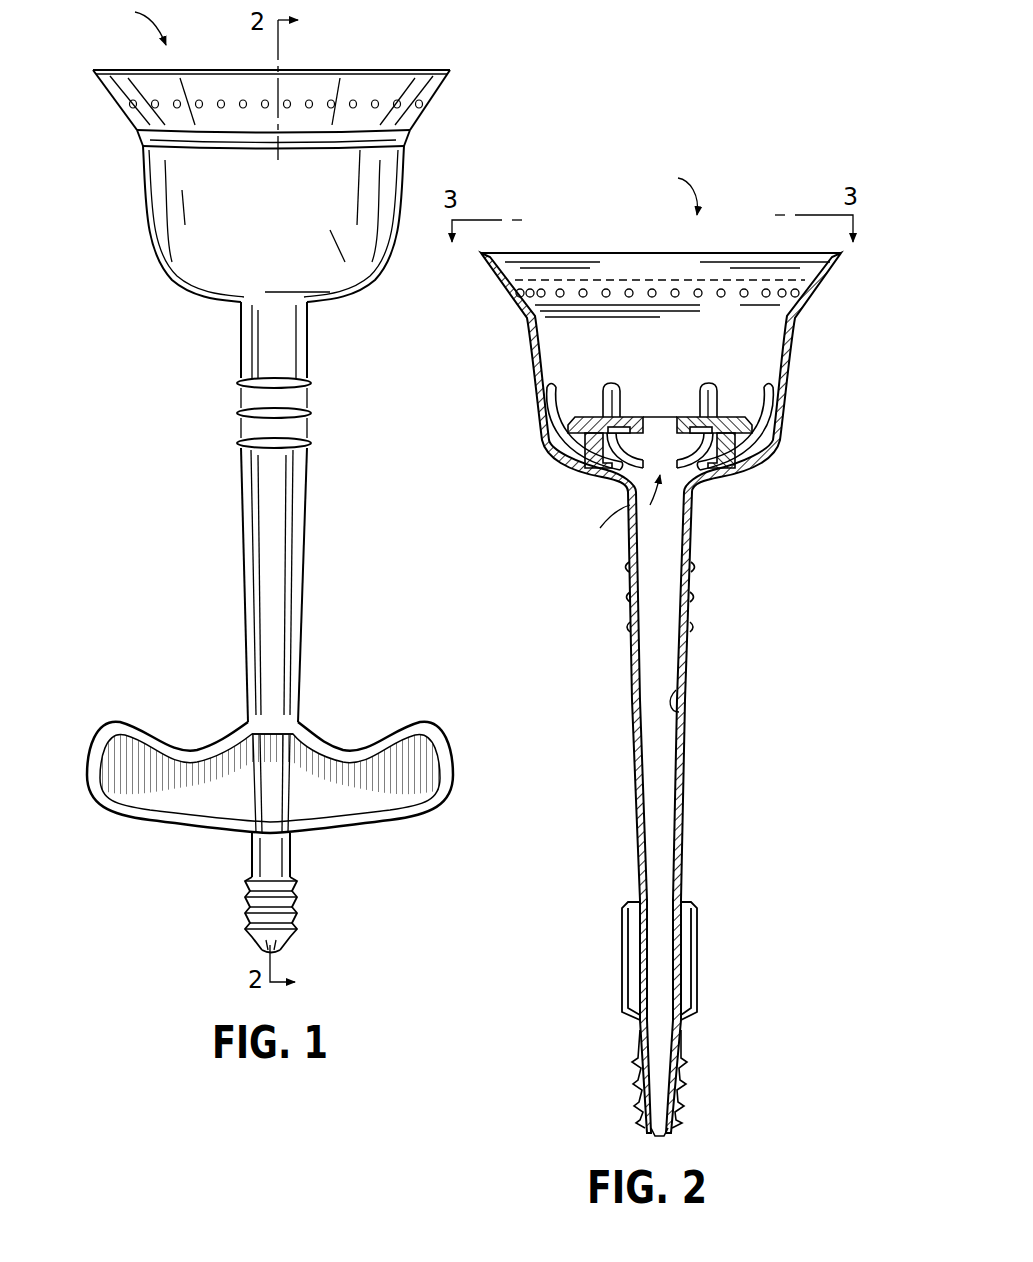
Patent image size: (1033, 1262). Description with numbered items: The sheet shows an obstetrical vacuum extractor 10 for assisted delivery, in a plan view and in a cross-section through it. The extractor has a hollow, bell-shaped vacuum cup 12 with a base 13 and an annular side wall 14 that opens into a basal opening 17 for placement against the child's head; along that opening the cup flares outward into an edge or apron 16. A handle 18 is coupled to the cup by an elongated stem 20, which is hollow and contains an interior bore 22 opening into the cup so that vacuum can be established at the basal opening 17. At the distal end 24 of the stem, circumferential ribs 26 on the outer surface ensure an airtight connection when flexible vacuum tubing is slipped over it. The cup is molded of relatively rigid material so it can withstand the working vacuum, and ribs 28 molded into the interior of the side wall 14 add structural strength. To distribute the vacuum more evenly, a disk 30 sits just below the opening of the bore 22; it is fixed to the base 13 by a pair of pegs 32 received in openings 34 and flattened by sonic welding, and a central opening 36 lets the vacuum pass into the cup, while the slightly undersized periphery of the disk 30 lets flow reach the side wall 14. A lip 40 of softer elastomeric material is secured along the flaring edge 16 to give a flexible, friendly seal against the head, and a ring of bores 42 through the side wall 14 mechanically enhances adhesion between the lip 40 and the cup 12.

In FIG. 1, the obstetrical vacuum extractor 10 is at (140, 452).
In FIG. 2, the obstetrical vacuum extractor 10 is at (760, 578).
In FIG. 1, the vacuum cup 12 is at (274, 176).
In FIG. 2, the vacuum cup 12 is at (669, 658).
In FIG. 1, the base 13 is at (215, 290).
In FIG. 2, the base 13 is at (588, 462).
In FIG. 1, the annular side wall 14 is at (148, 195).
In FIG. 2, the annular side wall 14 is at (538, 372).
In FIG. 2, the outwardly flaring edge 16 is at (508, 278).
In FIG. 1, the basal opening 17 is at (438, 72).
In FIG. 2, the basal opening 17 is at (510, 270).
In FIG. 1, the handle 18 is at (450, 760).
In FIG. 2, the handle 18 is at (620, 952).
In FIG. 1, the elongated stem 20 is at (303, 528).
In FIG. 2, the elongated stem 20 is at (715, 698).
In FIG. 2, the interior bore 22 is at (683, 688).
In FIG. 1, the distal end 24 is at (258, 950).
In FIG. 2, the distal end 24 is at (645, 1127).
In FIG. 1, the ribs 26 is at (248, 922).
In FIG. 2, the ribs 26 is at (638, 1093).
In FIG. 2, the ribs 28 is at (562, 405).
In FIG. 2, the disk 30 is at (750, 418).
In FIG. 2, the pegs 32 is at (742, 440).
In FIG. 2, the openings 34 is at (727, 413).
In FIG. 2, the central opening 36 is at (652, 417).
In FIG. 1, the lip 40 is at (103, 100).
In FIG. 2, the lip 40 is at (845, 262).
In FIG. 1, the bores 42 is at (303, 100).
In FIG. 2, the bores 42 is at (618, 288).